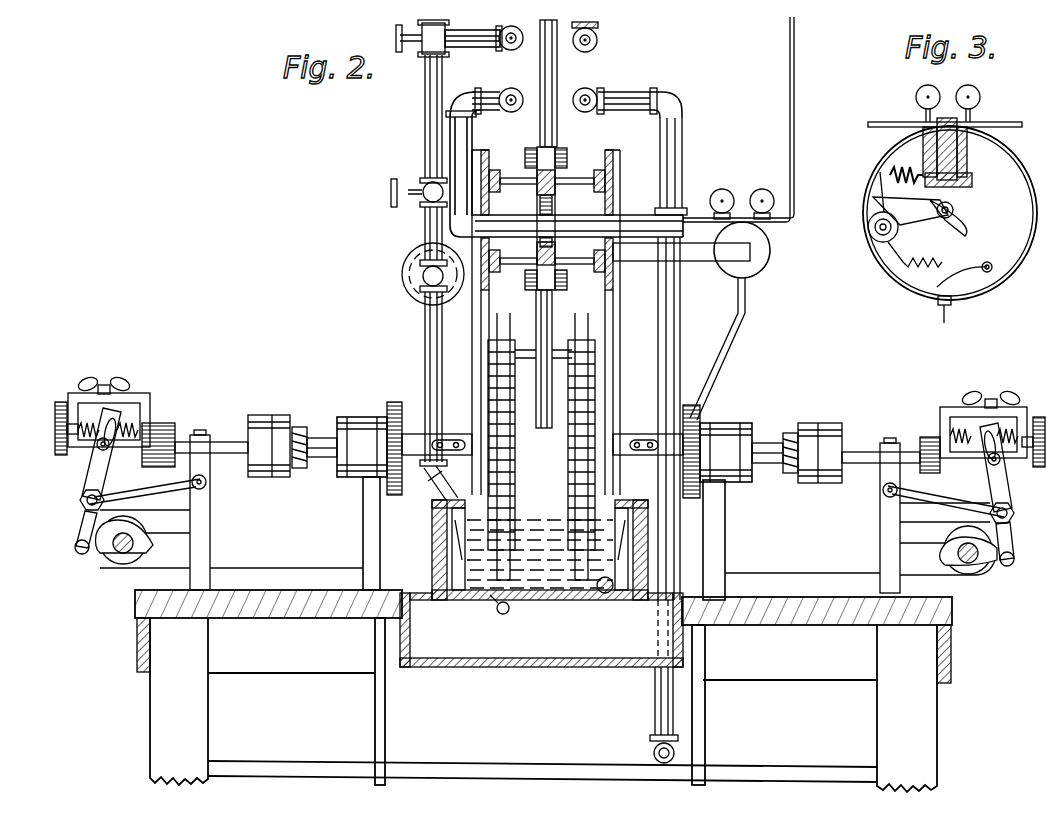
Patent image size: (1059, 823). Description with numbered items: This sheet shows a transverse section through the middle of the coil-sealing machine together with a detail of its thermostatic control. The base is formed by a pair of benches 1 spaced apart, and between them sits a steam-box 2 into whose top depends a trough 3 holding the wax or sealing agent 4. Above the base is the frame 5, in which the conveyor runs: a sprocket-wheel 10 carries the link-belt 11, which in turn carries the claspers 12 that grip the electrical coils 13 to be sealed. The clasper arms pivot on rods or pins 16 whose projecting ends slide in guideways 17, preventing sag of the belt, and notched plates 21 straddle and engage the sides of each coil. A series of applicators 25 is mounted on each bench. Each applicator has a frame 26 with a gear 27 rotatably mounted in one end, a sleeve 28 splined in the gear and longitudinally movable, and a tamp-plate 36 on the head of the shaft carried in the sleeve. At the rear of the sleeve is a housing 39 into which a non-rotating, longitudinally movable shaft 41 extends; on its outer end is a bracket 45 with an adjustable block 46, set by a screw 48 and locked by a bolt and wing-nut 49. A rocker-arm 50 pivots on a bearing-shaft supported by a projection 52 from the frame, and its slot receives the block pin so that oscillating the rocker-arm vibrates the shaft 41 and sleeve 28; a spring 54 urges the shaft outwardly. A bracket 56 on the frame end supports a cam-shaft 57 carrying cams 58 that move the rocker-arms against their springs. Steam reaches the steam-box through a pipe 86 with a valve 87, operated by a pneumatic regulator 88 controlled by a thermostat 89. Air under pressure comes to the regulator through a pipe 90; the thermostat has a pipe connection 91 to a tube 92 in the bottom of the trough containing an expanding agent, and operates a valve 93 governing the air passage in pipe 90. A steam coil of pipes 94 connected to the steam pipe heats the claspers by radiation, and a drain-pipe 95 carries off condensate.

In FIG. 2, the benches 1 is at (543, 691).
In FIG. 2, the steam-box 2 is at (566, 667).
In FIG. 2, the trough 3 is at (548, 600).
In FIG. 2, the sealing agent 4 is at (540, 554).
In FIG. 2, the frame 5 is at (482, 156).
In FIG. 2, the sprocket-wheel 10 is at (555, 201).
In FIG. 2, the link-belt 11 is at (537, 186).
In FIG. 2, the claspers 12 is at (556, 67).
In FIG. 2, the electrical coils 13 is at (583, 384).
In FIG. 2, the rods or pins 16 is at (576, 176).
In FIG. 2, the guideways 17 is at (495, 172).
In FIG. 2, the notched plates 21 is at (537, 424).
In FIG. 2, the applicators 25 is at (380, 552).
In FIG. 2, the frame 26 is at (290, 573).
In FIG. 2, the gear 27 is at (392, 406).
In FIG. 2, the sleeve 28 is at (318, 426).
In FIG. 2, the tamp-plate 36 is at (570, 480).
In FIG. 2, the housing 39 is at (298, 426).
In FIG. 2, the shaft 41 is at (224, 446).
In FIG. 2, the bracket 45 is at (148, 420).
In FIG. 2, the adjustable block 46 is at (125, 410).
In FIG. 2, the screw 48 is at (55, 418).
In FIG. 2, the bolt and wing-nut 49 is at (116, 385).
In FIG. 2, the rocker-arm 50 is at (80, 527).
In FIG. 2, the projection 52 is at (524, 511).
In FIG. 2, the spring 54 is at (158, 490).
In FIG. 2, the bracket 56 is at (150, 566).
In FIG. 2, the cam-shaft 57 is at (100, 558).
In FIG. 2, the cams 58 is at (146, 550).
In FIG. 2, the pipe 86 is at (424, 333).
In FIG. 2, the valve 87 is at (424, 279).
In FIG. 2, the regulator 88 is at (428, 258).
In FIG. 2, the thermostat 89 is at (724, 268).
In FIG. 3, the thermostat 89 is at (950, 224).
In FIG. 2, the pipe 90 is at (699, 218).
In FIG. 3, the pipe 90 is at (877, 122).
In FIG. 2, the pipe connection 91 is at (742, 348).
In FIG. 2, the tube 92 is at (608, 594).
In FIG. 3, the valve 93 is at (967, 178).
In FIG. 2, the pipes 94 is at (517, 48).
In FIG. 2, the drain-pipe 95 is at (654, 718).